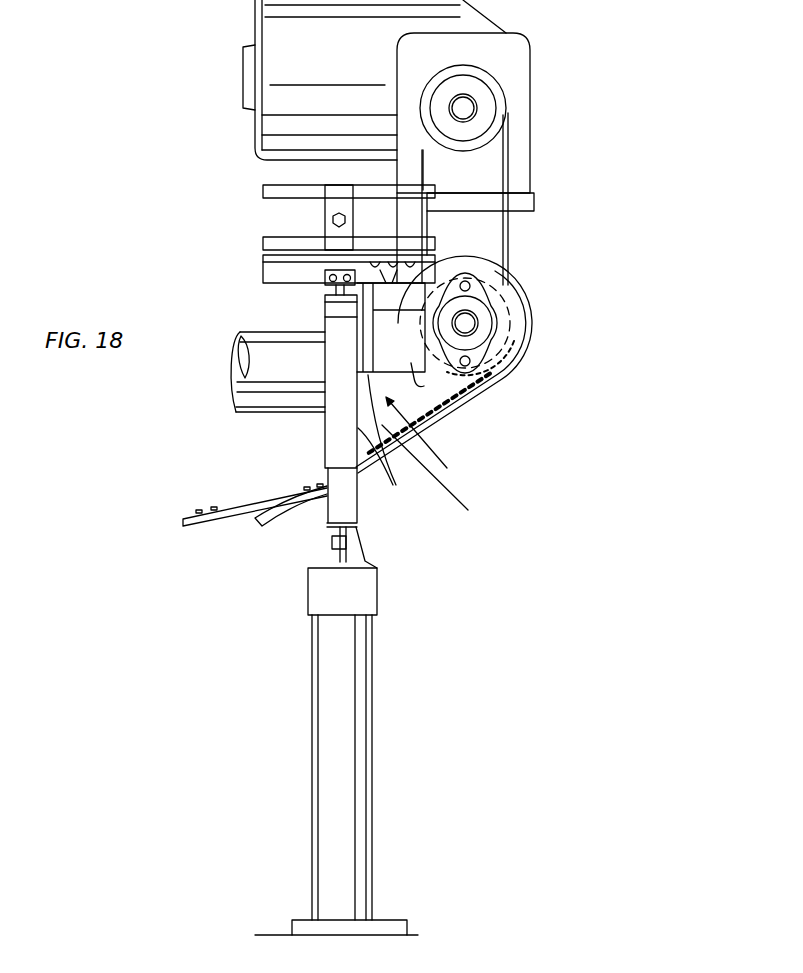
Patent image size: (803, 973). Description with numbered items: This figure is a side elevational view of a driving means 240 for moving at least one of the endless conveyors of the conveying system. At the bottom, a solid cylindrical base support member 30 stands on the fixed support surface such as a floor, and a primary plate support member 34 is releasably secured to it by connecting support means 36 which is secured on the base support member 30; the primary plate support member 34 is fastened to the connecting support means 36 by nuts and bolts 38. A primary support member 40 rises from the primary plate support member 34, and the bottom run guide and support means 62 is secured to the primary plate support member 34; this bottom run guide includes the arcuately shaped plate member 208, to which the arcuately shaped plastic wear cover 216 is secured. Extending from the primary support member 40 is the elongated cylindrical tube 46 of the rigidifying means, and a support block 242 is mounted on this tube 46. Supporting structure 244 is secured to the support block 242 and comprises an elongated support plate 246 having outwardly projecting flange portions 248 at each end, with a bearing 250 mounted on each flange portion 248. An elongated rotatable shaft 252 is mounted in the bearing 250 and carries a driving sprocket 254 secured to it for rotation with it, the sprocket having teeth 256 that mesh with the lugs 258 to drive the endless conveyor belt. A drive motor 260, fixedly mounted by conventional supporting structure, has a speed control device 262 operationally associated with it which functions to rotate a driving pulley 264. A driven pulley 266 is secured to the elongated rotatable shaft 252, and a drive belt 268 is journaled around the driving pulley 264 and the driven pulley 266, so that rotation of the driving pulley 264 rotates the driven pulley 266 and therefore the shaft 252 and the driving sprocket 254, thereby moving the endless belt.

The drive motor 260 is at (352, 70).
The speed control device 262 is at (507, 58).
The driving pulley 264 is at (473, 104).
The driving means 240 is at (565, 124).
The drive belt 268 is at (508, 226).
The driven pulley 266 is at (481, 297).
The elongated rotatable shaft 252 is at (466, 322).
The driving sprocket 254 is at (516, 310).
The bearing 250 is at (483, 328).
The teeth 256 is at (513, 377).
The lugs 258 is at (414, 281).
The flange portions 248 is at (426, 390).
The supporting structure 244 is at (439, 444).
The elongated support plate 246 is at (446, 476).
The support block 242 is at (398, 441).
The elongated cylindrical tube 46 is at (245, 414).
The primary support member 40 is at (340, 445).
The arcuately shaped plastic wear cover 216 is at (268, 508).
The arcuately shaped plate member 208 is at (266, 522).
The primary plate support member 34 is at (328, 531).
The nuts and bolts 38 is at (331, 549).
The connecting support means 36 is at (325, 602).
The base support member 30 is at (333, 706).
The bottom run guide and support means 62 is at (397, 531).